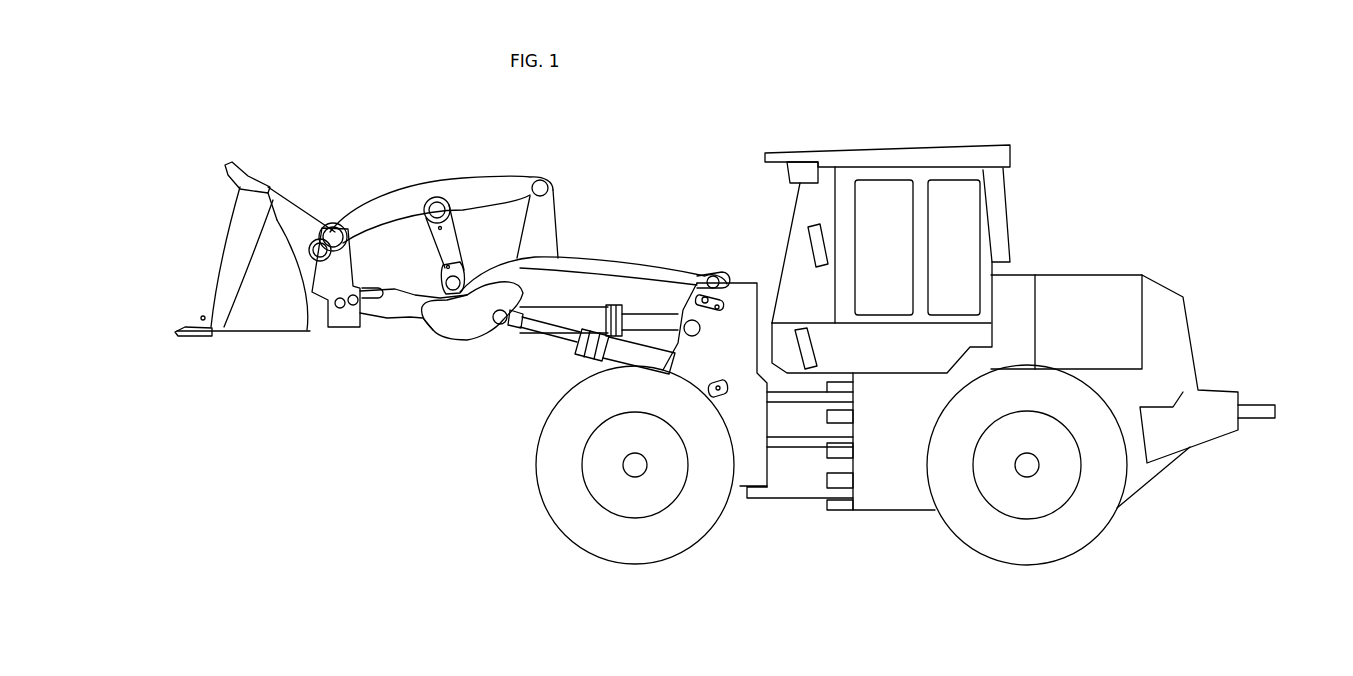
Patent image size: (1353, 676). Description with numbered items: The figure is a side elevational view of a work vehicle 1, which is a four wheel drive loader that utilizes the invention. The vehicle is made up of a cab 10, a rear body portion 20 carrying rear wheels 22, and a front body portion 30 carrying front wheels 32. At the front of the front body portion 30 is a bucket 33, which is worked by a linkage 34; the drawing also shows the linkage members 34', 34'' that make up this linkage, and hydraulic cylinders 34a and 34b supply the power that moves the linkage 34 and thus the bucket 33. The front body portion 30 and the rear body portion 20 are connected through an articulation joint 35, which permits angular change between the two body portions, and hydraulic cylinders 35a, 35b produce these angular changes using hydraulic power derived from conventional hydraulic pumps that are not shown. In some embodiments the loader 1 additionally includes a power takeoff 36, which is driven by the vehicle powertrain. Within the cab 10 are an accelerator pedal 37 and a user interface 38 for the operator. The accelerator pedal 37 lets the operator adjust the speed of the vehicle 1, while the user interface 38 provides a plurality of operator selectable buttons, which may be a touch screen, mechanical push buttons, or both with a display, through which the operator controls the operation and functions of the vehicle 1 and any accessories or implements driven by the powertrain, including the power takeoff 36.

The work vehicle 1 is at (1103, 130).
The cab 10 is at (865, 96).
The rear body portion 20 is at (1090, 242).
The rear wheels 22 is at (1042, 548).
The front body portion 30 is at (611, 158).
The front wheels 32 is at (630, 550).
The bucket 33 is at (268, 302).
The linkage 34 is at (520, 250).
The lift arm 34' is at (543, 293).
The tilt linkage 34'' is at (436, 184).
The hydraulic cylinder 34a is at (600, 357).
The hydraulic cylinder 34b is at (645, 317).
The articulation joint 35 is at (811, 537).
The hydraulic cylinder 35a is at (803, 455).
The hydraulic cylinder 35b is at (782, 513).
The power takeoff 36 is at (1263, 415).
The accelerator pedal 37 is at (808, 368).
The user interface 38 is at (812, 243).